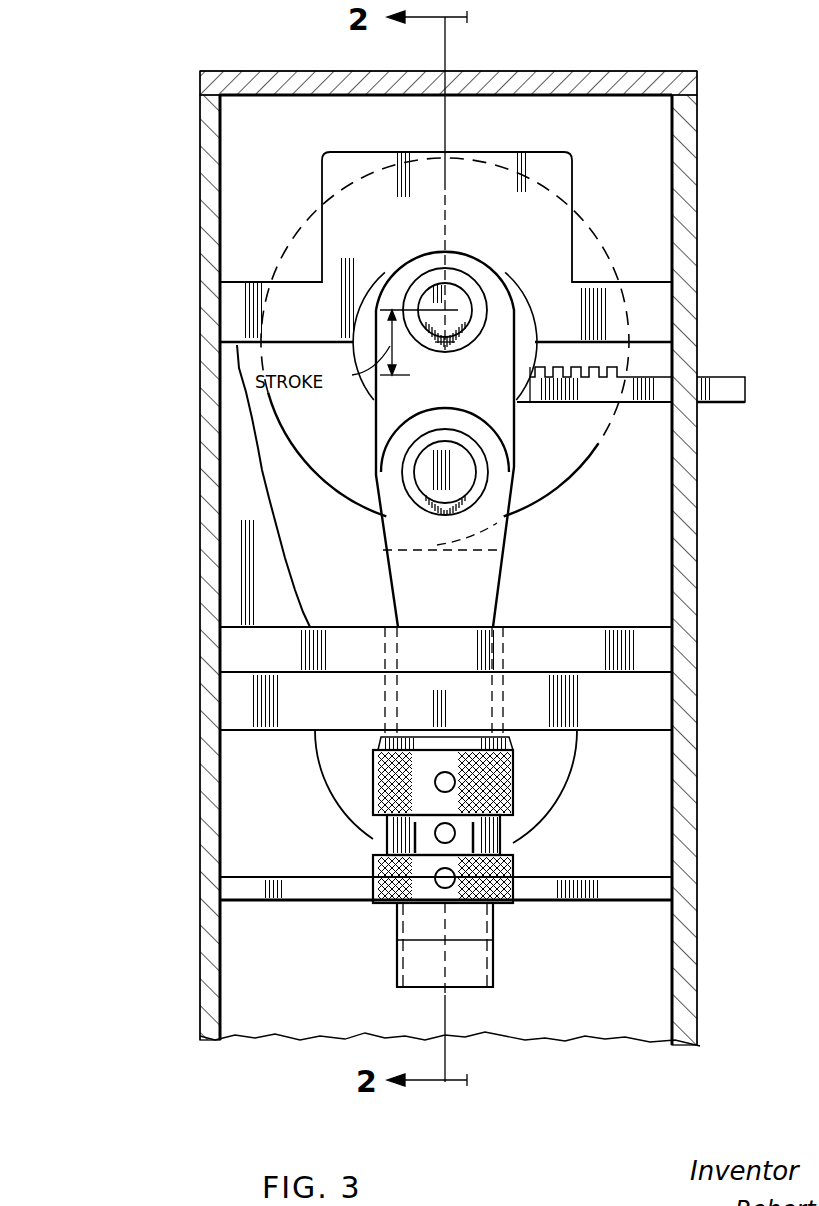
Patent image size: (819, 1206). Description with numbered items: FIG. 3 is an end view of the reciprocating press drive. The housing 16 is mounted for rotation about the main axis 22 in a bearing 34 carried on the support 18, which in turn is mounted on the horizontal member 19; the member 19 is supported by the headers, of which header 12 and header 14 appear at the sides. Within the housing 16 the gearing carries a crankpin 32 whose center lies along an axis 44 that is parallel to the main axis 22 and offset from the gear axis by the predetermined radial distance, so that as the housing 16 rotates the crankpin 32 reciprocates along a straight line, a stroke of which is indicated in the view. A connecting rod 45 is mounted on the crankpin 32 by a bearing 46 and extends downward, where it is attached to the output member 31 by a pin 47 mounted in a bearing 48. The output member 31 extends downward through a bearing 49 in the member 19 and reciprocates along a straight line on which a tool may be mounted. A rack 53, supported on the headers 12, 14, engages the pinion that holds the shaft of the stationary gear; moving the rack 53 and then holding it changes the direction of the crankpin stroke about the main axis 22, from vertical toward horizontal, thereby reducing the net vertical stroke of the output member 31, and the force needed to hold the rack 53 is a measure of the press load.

The header 12 is at (696, 546).
The header 14 is at (200, 541).
The housing 16 is at (393, 558).
The support 18 is at (565, 173).
The horizontal member 19 is at (662, 703).
The main axis 22 is at (475, 380).
The output member 31 is at (488, 968).
The crankpin 32 is at (455, 282).
The bearing 34 is at (533, 322).
The axis 44 is at (437, 300).
The connecting rod 45 is at (382, 427).
The bearing 46 is at (478, 288).
The pin 47 is at (458, 472).
The bearing 48 is at (483, 497).
The bearing 49 is at (496, 634).
The rack 53 is at (730, 384).